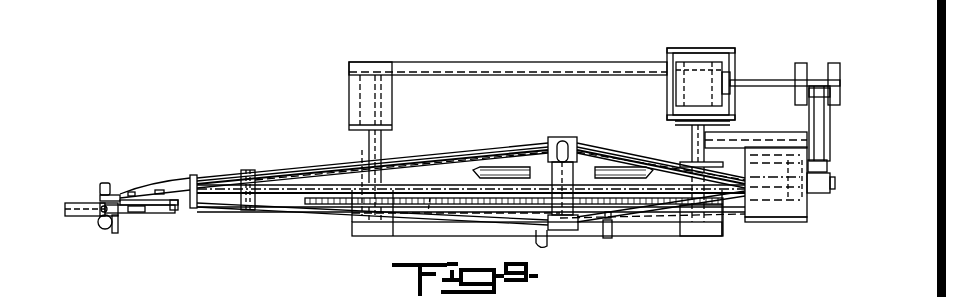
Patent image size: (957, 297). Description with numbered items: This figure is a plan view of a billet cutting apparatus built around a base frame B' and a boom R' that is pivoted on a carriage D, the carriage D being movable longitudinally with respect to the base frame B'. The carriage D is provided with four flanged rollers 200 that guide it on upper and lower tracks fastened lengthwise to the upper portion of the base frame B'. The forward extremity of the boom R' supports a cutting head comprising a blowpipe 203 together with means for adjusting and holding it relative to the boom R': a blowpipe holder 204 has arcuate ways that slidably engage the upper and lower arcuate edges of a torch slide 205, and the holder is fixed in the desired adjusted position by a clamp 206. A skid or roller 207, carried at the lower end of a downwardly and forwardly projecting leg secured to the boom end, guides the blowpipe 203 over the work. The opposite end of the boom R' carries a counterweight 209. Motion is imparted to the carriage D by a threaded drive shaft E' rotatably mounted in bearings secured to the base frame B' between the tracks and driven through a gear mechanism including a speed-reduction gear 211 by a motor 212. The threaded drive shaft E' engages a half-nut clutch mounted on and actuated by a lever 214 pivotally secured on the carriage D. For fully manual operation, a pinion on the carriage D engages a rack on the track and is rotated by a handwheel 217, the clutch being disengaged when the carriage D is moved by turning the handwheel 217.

The flanged rollers 200 is at (481, 170).
The blowpipe 203 is at (101, 228).
The blowpipe holder 204 is at (104, 235).
The torch slide 205 is at (177, 211).
The clamp 206 is at (135, 213).
The roller 207 is at (110, 184).
The counterweight 209 is at (755, 222).
The speed-reduction gear 211 is at (815, 75).
The motor 212 is at (685, 68).
The lever 214 is at (609, 238).
The handwheel 217 is at (547, 244).
The base frame B' is at (578, 149).
The carriage D is at (594, 208).
The threaded drive shaft E' is at (432, 169).
The boom R' is at (467, 177).